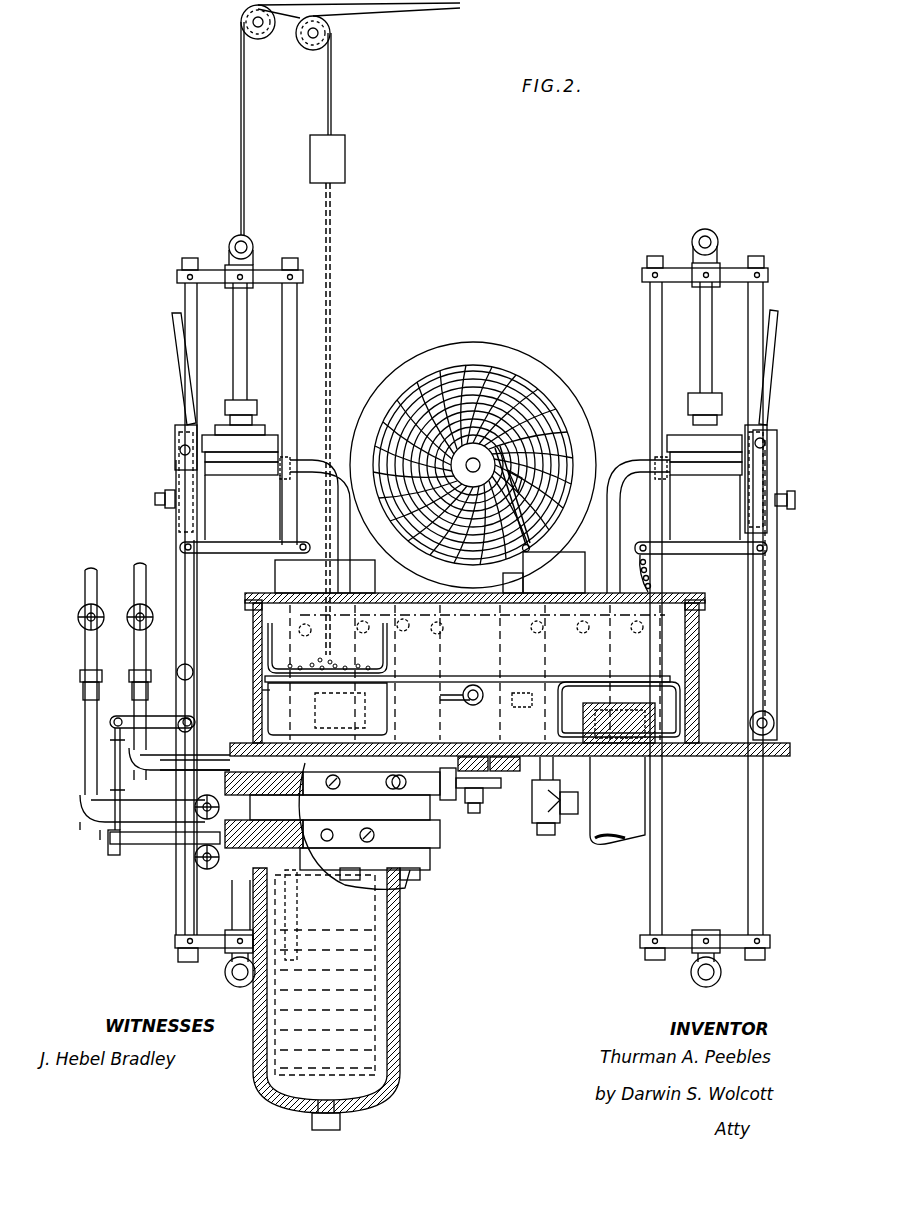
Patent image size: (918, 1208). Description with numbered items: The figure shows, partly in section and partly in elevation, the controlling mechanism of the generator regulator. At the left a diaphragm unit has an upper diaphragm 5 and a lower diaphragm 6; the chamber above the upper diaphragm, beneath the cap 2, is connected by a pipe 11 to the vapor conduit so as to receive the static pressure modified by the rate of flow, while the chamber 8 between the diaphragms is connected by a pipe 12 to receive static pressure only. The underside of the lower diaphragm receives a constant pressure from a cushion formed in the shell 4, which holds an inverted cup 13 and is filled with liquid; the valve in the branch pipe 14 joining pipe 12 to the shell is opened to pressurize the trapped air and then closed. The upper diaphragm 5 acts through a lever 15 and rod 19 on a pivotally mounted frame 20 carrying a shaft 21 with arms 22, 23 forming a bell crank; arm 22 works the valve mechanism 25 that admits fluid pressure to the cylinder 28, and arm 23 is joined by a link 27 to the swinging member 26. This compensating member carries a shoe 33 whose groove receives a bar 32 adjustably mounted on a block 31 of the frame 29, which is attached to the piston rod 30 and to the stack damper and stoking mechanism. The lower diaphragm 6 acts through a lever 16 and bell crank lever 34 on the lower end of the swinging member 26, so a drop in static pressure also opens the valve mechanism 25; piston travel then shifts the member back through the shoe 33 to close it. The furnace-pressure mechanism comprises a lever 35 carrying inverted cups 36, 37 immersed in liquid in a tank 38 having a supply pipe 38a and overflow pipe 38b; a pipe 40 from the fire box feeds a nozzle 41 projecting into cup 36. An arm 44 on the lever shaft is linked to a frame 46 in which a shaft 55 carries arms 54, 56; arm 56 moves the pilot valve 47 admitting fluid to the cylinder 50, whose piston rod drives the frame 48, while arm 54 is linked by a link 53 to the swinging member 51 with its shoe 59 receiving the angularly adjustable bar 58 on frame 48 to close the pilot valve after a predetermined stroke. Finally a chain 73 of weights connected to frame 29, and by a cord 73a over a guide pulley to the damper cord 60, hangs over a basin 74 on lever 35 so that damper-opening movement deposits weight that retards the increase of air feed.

The cap 2 is at (340, 757).
The shell 4 is at (400, 975).
The upper diaphragm 5 is at (230, 777).
The lower diaphragm 6 is at (420, 840).
The chamber 8 is at (275, 808).
The pipe 11 is at (134, 650).
The pipe 12 is at (84, 652).
The inverted cup 13 is at (372, 940).
The branch pipe 14 is at (200, 852).
The lever 15 is at (448, 800).
The lever 16 is at (135, 855).
The rod 19 is at (468, 606).
The pivotally mounted frame 20 is at (459, 583).
The shaft 21 is at (427, 618).
The arm 22 is at (345, 603).
The arm 23 is at (320, 526).
The valve mechanism 25 is at (375, 708).
The swinging member 26 is at (174, 558).
The link 27 is at (245, 562).
The cylinder 28 is at (246, 487).
The frame 29 is at (200, 337).
The rod 30 is at (247, 310).
The block 31 is at (200, 427).
The bar 32 is at (176, 383).
The shoe 33 is at (173, 435).
The bell crank lever 34 is at (170, 720).
The lever 35 is at (486, 660).
The inverted cup 36 is at (680, 690).
The inverted cup 37 is at (265, 680).
The tank 38 is at (262, 706).
The supply pipe 38a is at (540, 812).
The overflow pipe 38b is at (478, 813).
The pipe 40 is at (617, 800).
The nozzle 41 is at (655, 718).
The arm 44 is at (529, 704).
The frame 46 is at (554, 572).
The pilot valve 47 is at (580, 686).
The frame 48 is at (648, 352).
The cylinder 50 is at (698, 487).
The swinging member 51 is at (770, 603).
The link 53 is at (712, 555).
The arm 54 is at (628, 560).
The shaft 55 is at (631, 656).
The arm 56 is at (598, 590).
The bar 58 is at (773, 380).
The shoe 59 is at (770, 420).
The cord 60 is at (396, 8).
The chain 73 is at (332, 337).
The cord 73a is at (334, 95).
The basin 74 is at (268, 637).